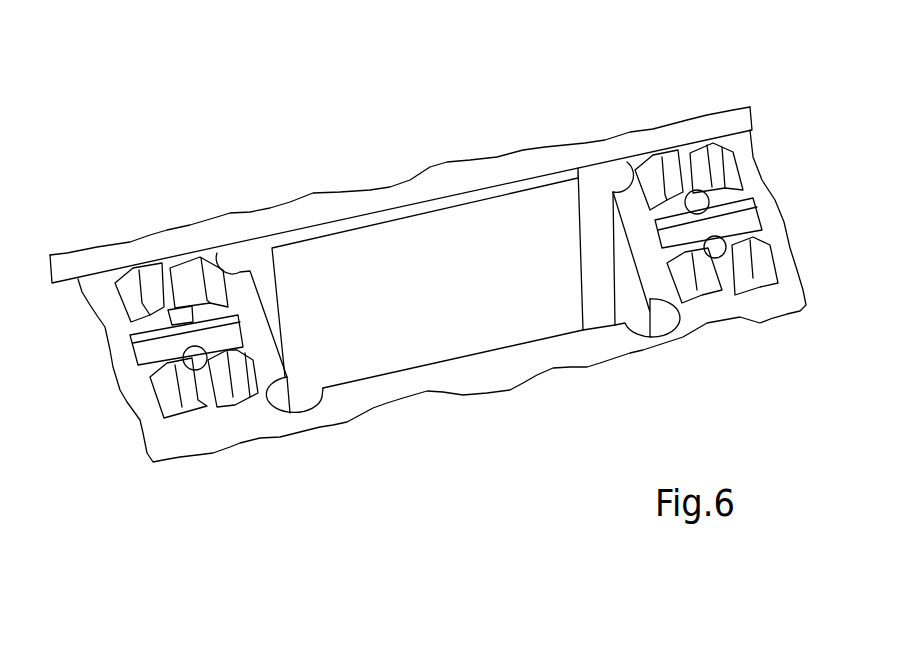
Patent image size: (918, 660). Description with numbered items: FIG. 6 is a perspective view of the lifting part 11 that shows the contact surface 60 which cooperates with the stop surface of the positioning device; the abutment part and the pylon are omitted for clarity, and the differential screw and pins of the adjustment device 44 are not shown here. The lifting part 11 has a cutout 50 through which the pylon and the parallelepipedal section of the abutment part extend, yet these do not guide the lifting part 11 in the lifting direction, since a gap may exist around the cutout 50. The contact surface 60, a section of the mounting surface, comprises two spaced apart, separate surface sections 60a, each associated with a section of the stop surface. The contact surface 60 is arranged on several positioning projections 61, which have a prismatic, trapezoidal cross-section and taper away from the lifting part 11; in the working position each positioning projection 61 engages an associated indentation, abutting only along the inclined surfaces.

The lifting part 11 is at (645, 350).
The adjustment device 44 is at (517, 409).
The cutout 50 is at (402, 325).
The contact surface 60 is at (455, 331).
The surface sections 60a is at (772, 226).
The positioning projections 61 is at (704, 160).